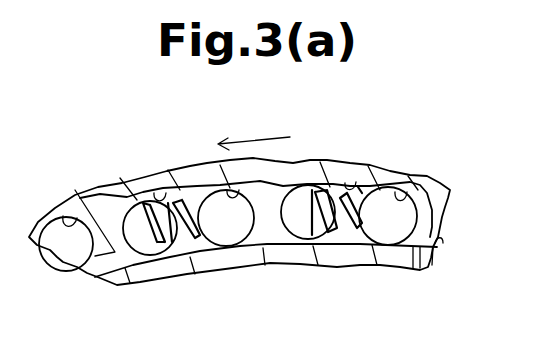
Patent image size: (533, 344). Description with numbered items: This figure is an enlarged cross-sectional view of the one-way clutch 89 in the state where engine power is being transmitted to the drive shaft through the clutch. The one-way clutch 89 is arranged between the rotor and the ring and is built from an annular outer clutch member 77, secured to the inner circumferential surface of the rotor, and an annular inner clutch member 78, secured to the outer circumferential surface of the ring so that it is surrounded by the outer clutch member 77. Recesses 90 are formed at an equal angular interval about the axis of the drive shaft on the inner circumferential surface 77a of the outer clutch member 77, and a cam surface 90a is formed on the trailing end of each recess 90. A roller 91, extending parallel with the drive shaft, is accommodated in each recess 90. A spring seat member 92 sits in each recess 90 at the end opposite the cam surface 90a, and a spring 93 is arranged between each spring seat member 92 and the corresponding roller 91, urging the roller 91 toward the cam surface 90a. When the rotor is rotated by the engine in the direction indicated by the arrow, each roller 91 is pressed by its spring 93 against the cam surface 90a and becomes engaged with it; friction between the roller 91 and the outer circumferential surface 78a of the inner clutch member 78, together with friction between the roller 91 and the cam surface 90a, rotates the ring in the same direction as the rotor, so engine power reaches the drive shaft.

The outer clutch member 77 is at (188, 170).
The inner circumferential surface of the outer clutch member 77a is at (440, 243).
The inner clutch member 78 is at (262, 262).
The outer circumferential surface of the inner clutch member 78a is at (417, 257).
The one-way clutch 89 is at (308, 169).
The recess 90 is at (158, 196).
The cam surface 90a is at (68, 222).
The roller 91 is at (65, 253).
The spring seat member 92 is at (137, 250).
The spring 93 is at (182, 247).